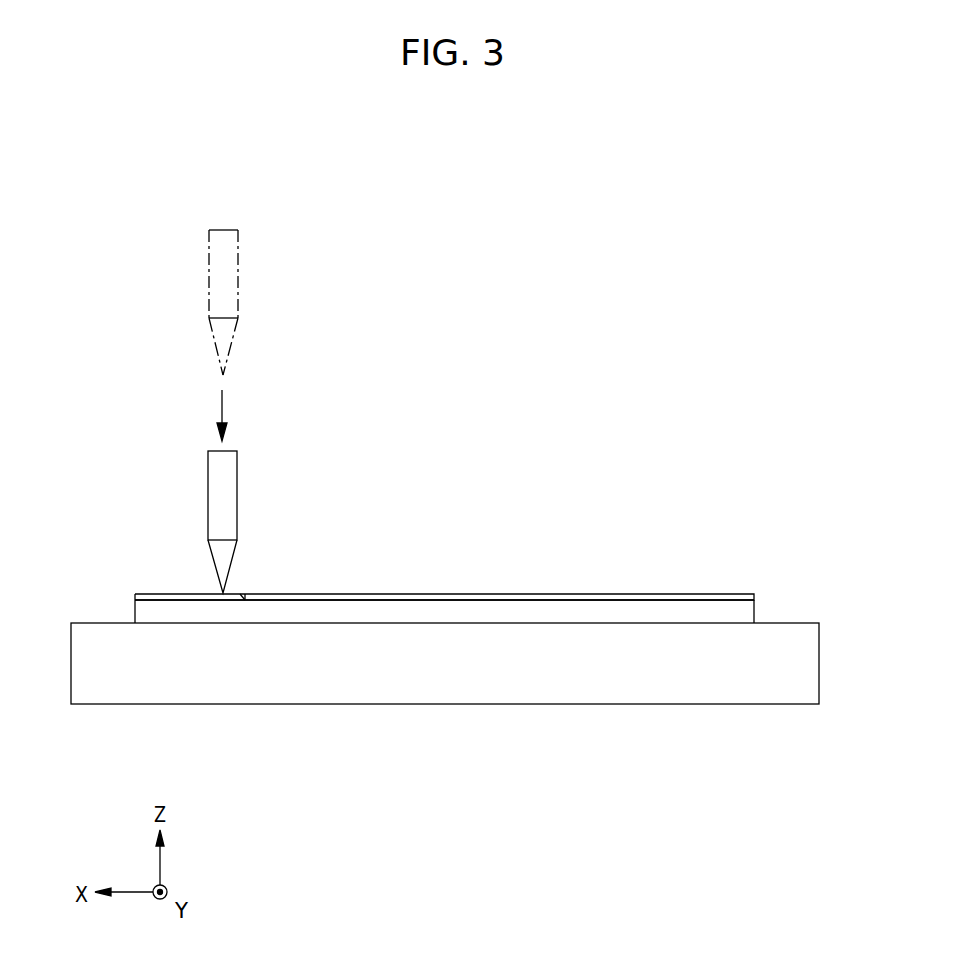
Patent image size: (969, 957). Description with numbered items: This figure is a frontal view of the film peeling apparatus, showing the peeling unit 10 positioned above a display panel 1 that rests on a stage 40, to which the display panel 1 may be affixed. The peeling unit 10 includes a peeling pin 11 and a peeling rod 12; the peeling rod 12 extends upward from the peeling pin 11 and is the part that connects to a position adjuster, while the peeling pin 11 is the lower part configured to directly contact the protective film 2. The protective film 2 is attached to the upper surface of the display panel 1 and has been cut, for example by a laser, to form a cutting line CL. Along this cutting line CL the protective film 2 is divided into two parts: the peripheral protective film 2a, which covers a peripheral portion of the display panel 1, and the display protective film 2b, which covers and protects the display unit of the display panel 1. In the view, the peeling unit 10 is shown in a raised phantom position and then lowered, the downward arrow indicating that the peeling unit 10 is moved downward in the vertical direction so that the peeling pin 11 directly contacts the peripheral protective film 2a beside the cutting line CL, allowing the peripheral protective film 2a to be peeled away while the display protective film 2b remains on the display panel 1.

The peeling unit 10 is at (173, 522).
The peeling pin 11 is at (218, 559).
The peeling rod 12 is at (218, 502).
The cutting line CL is at (248, 594).
The display panel 1 is at (444, 612).
The protective film 2 is at (444, 696).
The peripheral protective film 2a is at (155, 600).
The display protective film 2b is at (275, 600).
The stage 40 is at (579, 697).